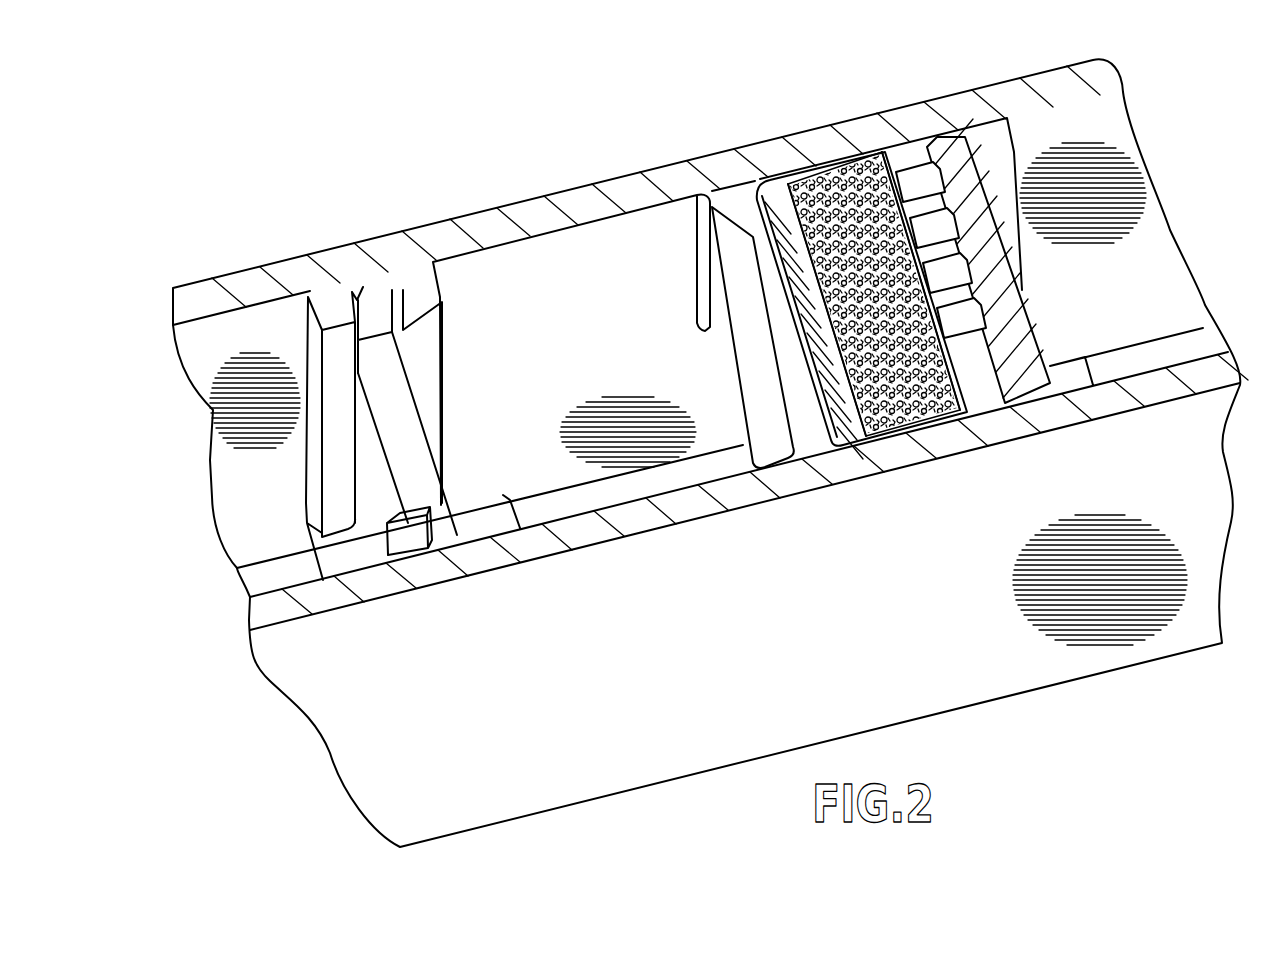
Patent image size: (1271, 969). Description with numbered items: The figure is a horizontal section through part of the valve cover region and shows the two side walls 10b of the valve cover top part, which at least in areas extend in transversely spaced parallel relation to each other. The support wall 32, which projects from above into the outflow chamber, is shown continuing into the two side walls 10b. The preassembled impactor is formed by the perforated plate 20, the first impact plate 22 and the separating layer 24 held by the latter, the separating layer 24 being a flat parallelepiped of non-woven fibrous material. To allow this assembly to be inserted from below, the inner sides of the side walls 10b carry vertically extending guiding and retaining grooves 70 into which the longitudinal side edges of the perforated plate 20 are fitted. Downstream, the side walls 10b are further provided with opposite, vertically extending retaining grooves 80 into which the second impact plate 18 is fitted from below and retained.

The side walls 10b is at (555, 209).
The second impact plate 18 is at (437, 490).
The perforated plate 20 is at (942, 274).
The first impact plate 22 is at (768, 190).
The separating layer 24 is at (838, 183).
The support wall 32 is at (768, 325).
The guiding and retaining grooves 70 is at (958, 185).
The retaining grooves 80 is at (356, 295).